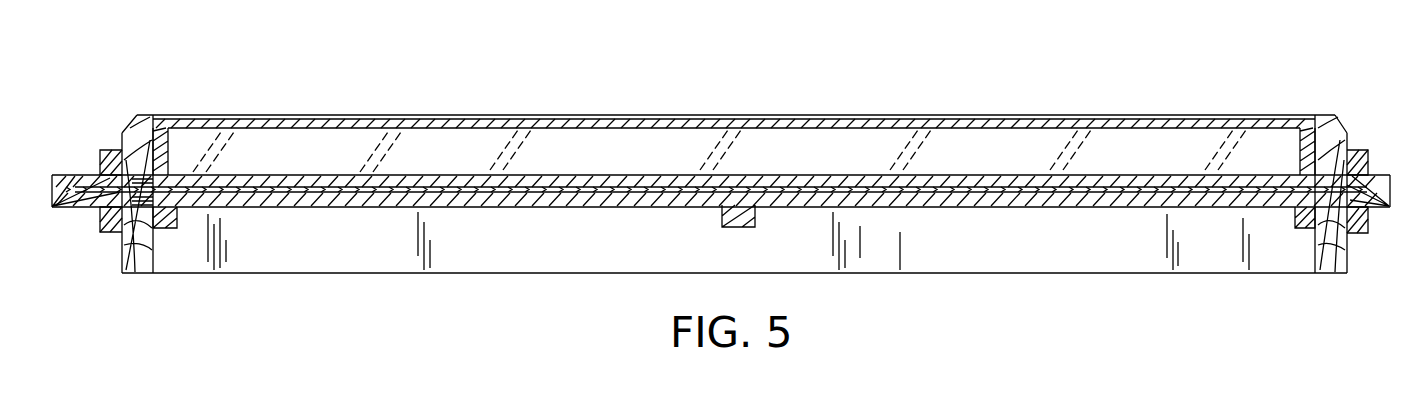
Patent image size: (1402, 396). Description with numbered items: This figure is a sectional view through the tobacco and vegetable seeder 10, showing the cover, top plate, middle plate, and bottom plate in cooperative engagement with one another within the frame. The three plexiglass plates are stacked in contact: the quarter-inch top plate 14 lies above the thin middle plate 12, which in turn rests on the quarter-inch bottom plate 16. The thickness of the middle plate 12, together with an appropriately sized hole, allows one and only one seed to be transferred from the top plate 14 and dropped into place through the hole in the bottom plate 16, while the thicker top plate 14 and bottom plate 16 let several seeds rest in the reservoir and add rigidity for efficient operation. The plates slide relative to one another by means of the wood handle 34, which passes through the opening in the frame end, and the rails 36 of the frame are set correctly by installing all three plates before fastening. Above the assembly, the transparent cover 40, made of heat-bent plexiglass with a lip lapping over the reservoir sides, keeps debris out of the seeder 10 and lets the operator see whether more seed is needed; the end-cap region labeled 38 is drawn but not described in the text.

The tobacco and vegetable seeder 10 is at (824, 78).
The middle plate 12 is at (572, 188).
The top plate 14 is at (458, 178).
The bottom plate 16 is at (517, 207).
The wood handle 34 is at (1385, 177).
The rails 36 is at (1142, 250).
The end cap 38 is at (1347, 130).
The transparent cover 40 is at (1140, 115).